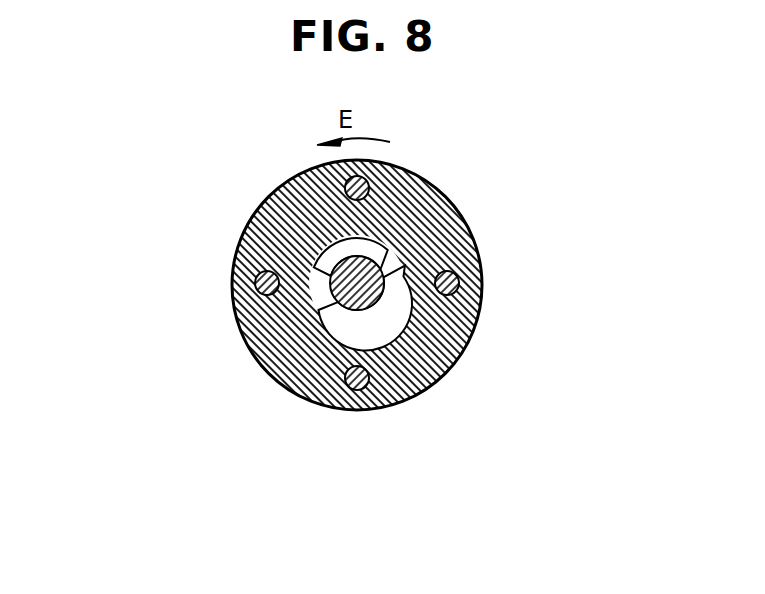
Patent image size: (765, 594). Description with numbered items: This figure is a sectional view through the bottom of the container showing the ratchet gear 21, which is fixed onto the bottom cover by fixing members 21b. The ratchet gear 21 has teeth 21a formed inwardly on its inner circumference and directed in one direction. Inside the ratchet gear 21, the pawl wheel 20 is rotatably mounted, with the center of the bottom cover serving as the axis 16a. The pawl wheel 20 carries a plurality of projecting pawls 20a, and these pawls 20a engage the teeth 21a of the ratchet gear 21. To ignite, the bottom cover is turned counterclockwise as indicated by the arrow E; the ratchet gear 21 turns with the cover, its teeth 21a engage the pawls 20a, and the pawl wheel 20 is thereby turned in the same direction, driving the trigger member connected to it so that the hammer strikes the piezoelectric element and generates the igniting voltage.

The axis 16a is at (372, 290).
The pawl wheel 20 is at (395, 278).
The projecting pawls 20a is at (372, 307).
The ratchet gear 21 is at (438, 238).
The teeth 21a is at (398, 310).
The fixing members 21b is at (360, 186).